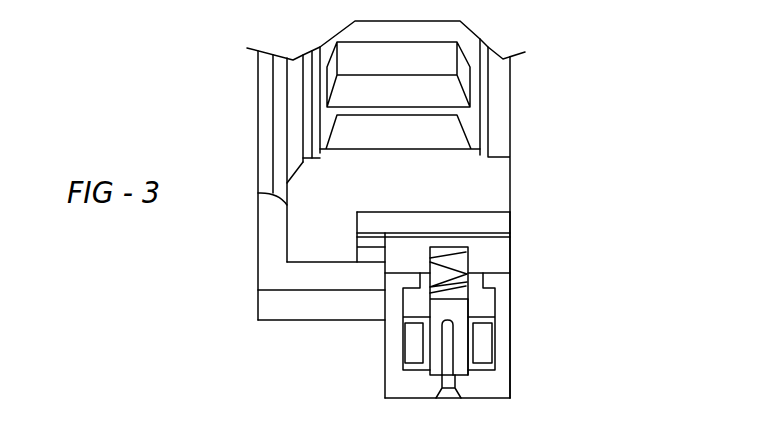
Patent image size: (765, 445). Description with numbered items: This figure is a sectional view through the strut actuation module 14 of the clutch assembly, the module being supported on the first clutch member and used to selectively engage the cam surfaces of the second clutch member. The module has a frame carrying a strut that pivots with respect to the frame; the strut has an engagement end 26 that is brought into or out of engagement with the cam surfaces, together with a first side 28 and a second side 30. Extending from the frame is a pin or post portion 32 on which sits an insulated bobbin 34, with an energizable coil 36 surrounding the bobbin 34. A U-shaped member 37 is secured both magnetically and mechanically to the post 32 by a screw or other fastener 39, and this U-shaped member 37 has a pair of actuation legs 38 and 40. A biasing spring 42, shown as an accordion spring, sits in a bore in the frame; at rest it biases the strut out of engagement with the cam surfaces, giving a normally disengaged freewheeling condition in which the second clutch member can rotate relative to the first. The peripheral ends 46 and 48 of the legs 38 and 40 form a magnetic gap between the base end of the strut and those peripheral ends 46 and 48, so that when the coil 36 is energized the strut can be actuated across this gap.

The strut actuation module 14 is at (562, 302).
The engagement end 26 is at (513, 258).
The first side 28 is at (357, 246).
The second side 30 is at (513, 265).
The pin or post portion 32 is at (463, 353).
The insulated bobbin 34 is at (403, 340).
The energizable coil 36 is at (483, 342).
The U-shaped member 37 is at (510, 327).
The actuation leg 38 is at (510, 370).
The screw or other fastener 39 is at (445, 393).
The actuation leg 40 is at (385, 298).
The biasing spring 42 is at (468, 272).
The peripheral end 46 is at (512, 257).
The peripheral end 48 is at (400, 276).